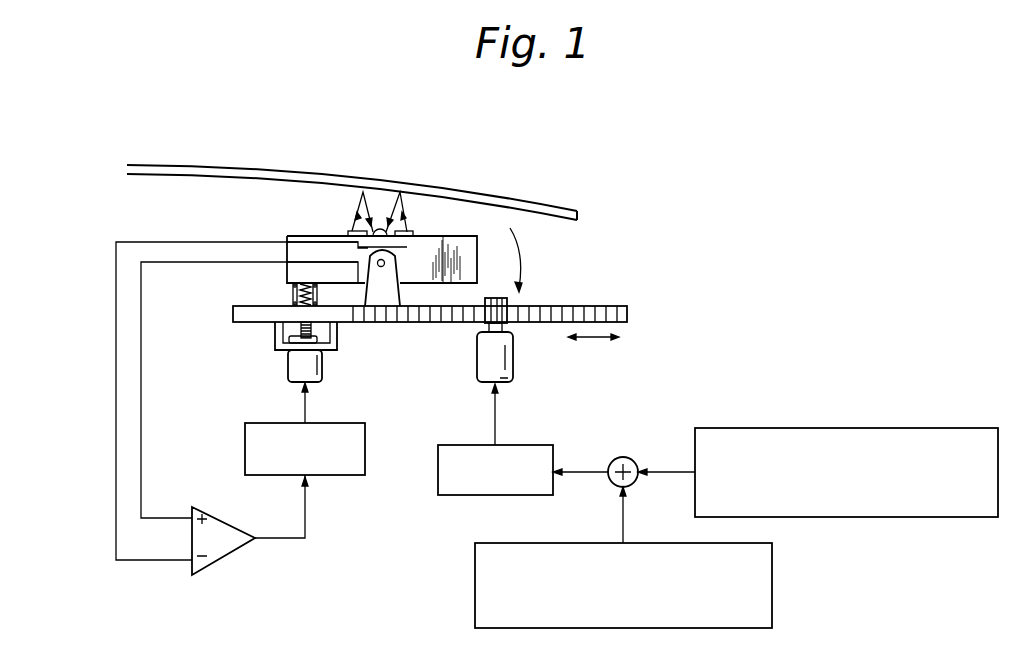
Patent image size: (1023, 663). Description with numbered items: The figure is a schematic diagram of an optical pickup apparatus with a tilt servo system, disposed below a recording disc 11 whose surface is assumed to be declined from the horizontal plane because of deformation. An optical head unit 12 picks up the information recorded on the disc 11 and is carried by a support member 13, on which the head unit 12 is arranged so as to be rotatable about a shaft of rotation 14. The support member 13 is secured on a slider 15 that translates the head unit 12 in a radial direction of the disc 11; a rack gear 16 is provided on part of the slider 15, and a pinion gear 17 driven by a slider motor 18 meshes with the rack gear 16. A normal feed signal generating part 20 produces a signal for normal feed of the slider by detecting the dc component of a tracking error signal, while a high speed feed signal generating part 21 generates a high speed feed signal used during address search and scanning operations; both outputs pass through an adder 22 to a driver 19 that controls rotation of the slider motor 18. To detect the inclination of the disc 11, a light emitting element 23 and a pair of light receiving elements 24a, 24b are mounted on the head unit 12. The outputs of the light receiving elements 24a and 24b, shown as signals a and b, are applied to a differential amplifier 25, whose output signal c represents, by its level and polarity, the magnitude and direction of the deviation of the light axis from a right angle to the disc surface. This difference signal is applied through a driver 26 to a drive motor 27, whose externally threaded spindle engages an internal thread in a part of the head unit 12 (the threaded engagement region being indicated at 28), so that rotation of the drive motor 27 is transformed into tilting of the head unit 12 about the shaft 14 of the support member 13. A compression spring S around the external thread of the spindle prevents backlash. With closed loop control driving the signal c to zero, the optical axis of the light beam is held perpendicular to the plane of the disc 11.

The recording disc 11 is at (268, 170).
The optical head unit 12 is at (281, 227).
The support member 13 is at (400, 292).
The shaft of rotation 14 is at (385, 263).
The slider 15 is at (234, 312).
The rack gear 16 is at (600, 305).
The pinion gear 17 is at (506, 299).
The slider motor 18 is at (514, 368).
The driver 19 is at (548, 443).
The normal feed signal generating part 20 is at (792, 428).
The high speed feed signal generating part 21 is at (772, 585).
The adder 22 is at (632, 458).
The light emitting element 23 is at (381, 228).
The light receiving element 24a is at (348, 230).
The light receiving element 24b is at (415, 232).
The differential amplifier 25 is at (220, 516).
The driver 26 is at (365, 436).
The drive motor 27 is at (323, 370).
The adjusting screw bracket 28 is at (302, 328).
The compression spring S is at (290, 293).
The signal a is at (141, 447).
The signal b is at (116, 454).
The differential output signal c is at (282, 538).